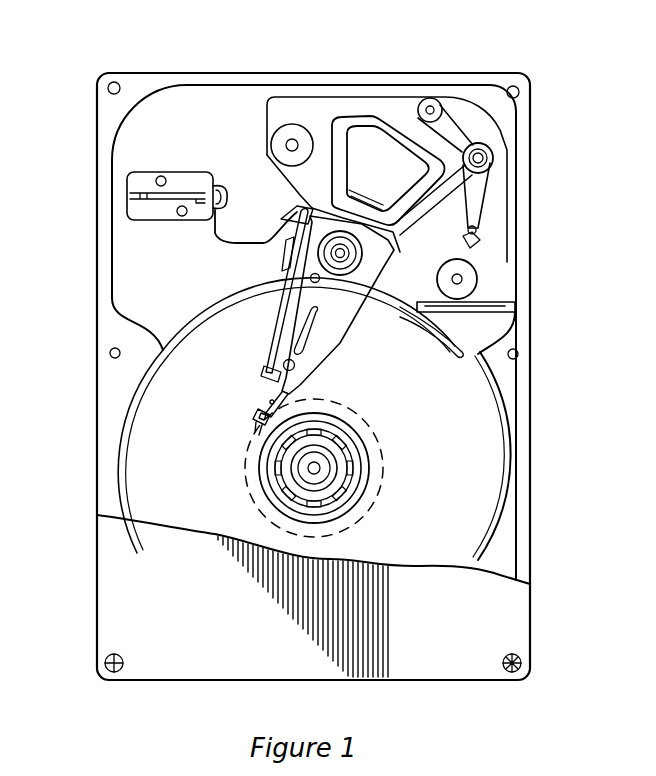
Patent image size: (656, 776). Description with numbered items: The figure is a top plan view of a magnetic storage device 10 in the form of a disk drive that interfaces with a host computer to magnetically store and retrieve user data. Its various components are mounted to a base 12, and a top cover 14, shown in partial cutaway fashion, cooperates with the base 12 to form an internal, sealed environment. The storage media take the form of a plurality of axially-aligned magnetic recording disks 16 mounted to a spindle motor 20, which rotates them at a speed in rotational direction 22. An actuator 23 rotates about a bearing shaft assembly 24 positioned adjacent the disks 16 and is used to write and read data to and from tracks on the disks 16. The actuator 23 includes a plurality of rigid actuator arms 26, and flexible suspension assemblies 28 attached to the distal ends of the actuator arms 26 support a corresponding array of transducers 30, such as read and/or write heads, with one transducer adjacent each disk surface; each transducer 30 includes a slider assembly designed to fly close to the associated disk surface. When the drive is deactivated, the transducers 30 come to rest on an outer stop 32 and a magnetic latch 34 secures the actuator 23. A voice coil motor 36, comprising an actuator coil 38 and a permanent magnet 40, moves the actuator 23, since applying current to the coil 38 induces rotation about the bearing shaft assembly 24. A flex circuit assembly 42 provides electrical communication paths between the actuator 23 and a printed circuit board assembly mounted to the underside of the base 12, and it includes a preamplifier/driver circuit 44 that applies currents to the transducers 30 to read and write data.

The magnetic storage device 10 is at (172, 50).
The base 12 is at (127, 253).
The top cover 14 is at (120, 572).
The magnetic recording disks 16 is at (466, 483).
The spindle motor 20 is at (345, 453).
The rotational direction 22 is at (175, 420).
The actuator 23 is at (330, 295).
The bearing shaft assembly 24 is at (348, 265).
The actuator arms 26 is at (317, 333).
The flexible suspension assemblies 28 is at (267, 392).
The transducers 30 is at (257, 415).
The outer stop 32 is at (368, 506).
The magnetic latch 34 is at (482, 197).
The voice coil motor 36 is at (382, 100).
The actuator coil 38 is at (352, 122).
The permanent magnet 40 is at (452, 237).
The flex circuit assembly 42 is at (240, 242).
The preamplifier/driver circuit 44 is at (287, 247).